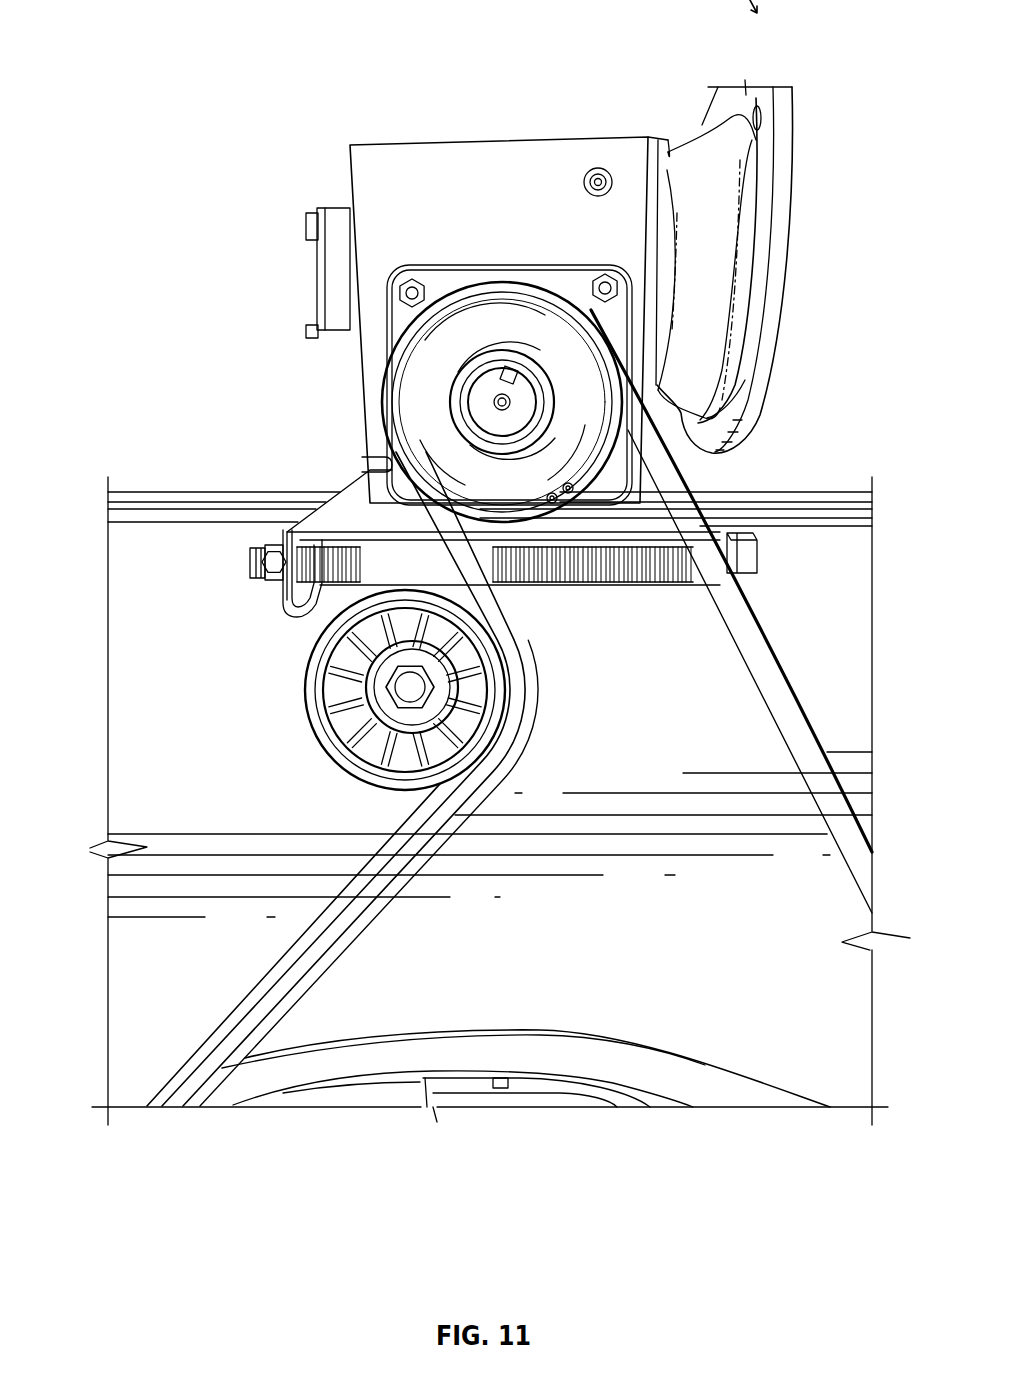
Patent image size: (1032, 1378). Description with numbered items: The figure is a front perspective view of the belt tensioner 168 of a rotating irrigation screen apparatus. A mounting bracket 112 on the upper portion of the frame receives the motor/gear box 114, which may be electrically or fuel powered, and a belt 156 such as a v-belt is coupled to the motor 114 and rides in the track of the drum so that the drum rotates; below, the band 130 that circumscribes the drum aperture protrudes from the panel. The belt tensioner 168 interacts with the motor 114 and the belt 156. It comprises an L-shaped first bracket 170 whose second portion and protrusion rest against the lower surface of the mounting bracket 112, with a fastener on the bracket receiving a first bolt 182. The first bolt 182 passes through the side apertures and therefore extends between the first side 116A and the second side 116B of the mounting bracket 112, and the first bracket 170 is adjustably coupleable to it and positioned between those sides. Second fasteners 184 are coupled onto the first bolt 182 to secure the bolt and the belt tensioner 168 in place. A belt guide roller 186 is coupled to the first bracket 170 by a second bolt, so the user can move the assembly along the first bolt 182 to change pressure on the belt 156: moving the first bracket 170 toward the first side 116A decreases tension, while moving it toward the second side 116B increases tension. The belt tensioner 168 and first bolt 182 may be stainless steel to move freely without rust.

The mounting bracket 112 is at (383, 489).
The motor/gear box 114 is at (570, 193).
The first side 116A is at (272, 568).
The second side 116B is at (720, 518).
The band 130 is at (563, 1057).
The belt 156 is at (285, 992).
The belt tensioner 168 is at (491, 720).
The first bracket 170 is at (377, 566).
The first bolt 182 is at (760, 562).
The second fasteners 184 is at (263, 544).
The belt guide roller 186 is at (363, 687).